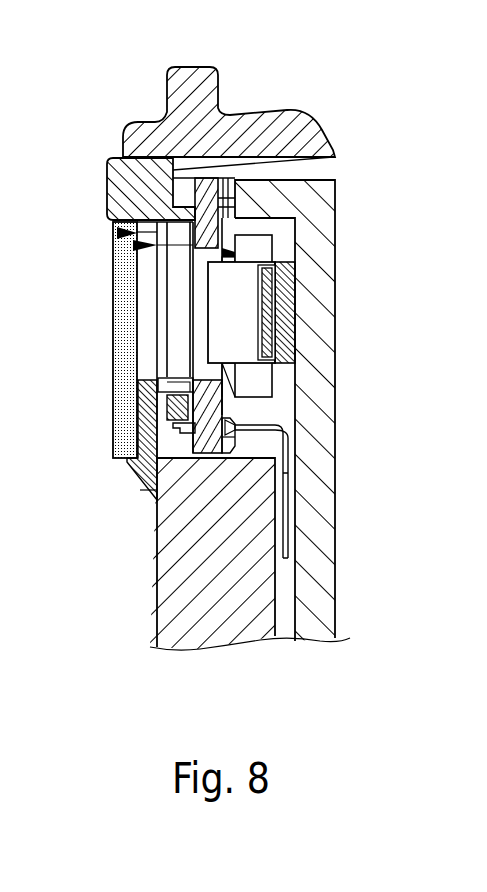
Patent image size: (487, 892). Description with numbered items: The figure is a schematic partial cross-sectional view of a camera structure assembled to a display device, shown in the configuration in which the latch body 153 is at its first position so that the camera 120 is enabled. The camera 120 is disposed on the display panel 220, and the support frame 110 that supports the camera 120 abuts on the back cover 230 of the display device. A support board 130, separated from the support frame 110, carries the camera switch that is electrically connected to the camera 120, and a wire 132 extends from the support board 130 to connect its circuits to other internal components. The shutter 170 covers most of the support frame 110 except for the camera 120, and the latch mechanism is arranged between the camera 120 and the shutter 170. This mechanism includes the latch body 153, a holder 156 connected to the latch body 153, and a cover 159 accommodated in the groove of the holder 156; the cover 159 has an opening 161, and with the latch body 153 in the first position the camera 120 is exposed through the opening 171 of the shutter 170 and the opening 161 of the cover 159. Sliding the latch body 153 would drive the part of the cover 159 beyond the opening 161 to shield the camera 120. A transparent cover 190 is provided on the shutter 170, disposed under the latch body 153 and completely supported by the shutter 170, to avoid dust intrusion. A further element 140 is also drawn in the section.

The support frame 110 is at (290, 347).
The camera 120 is at (270, 315).
The support board 130 is at (260, 245).
The wire 132 is at (285, 445).
The fastener 140 is at (170, 438).
The latch body 153 is at (108, 178).
The holder 156 is at (170, 410).
The cover 159 is at (157, 381).
The opening 161 is at (113, 252).
The shutter 170 is at (318, 141).
The opening 171 is at (110, 232).
The transparent cover 190 is at (120, 328).
The display panel 220 is at (167, 567).
The back cover 230 is at (327, 488).